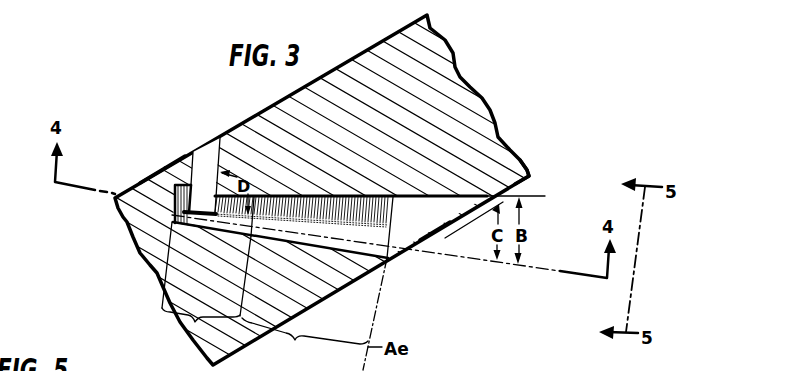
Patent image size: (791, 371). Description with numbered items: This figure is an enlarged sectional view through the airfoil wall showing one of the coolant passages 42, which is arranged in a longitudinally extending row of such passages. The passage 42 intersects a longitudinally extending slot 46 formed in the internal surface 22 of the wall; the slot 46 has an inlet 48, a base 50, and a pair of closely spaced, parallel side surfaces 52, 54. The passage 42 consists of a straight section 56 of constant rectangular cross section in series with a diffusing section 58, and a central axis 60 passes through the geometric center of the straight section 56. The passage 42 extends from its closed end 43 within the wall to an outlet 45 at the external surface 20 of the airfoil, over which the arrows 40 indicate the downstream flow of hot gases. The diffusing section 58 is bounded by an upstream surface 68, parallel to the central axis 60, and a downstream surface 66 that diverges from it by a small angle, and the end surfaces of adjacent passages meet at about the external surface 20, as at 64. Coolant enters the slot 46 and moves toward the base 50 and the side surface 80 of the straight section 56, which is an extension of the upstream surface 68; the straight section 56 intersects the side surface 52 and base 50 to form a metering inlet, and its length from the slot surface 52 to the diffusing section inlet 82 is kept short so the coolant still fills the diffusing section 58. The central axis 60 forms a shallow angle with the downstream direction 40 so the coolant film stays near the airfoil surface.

The internal surface of the wall 22 is at (368, 49).
The external surface of the airfoil 20 is at (531, 176).
The closed end of the passage 43 is at (152, 176).
The slot 46 is at (173, 164).
The side surface of the slot 54 is at (198, 156).
The inlet of the slot 48 is at (212, 141).
The side surface of the slot 52 is at (220, 138).
The coolant passage 42 is at (298, 196).
The downstream surface of the diffusing section 66 is at (330, 196).
The base of the slot 50 is at (200, 219).
The inlet of the diffusing section 82 is at (257, 226).
The upstream surface of the diffusing section 68 is at (294, 241).
The side surface of the straight section 80 is at (200, 227).
The straight section 56 is at (206, 283).
The diffusing section 58 is at (305, 340).
The intersection of end surfaces 64 is at (391, 227).
The outlet of the passage 45 is at (434, 233).
The arrows representing direction of flow 40 is at (465, 225).
The central axis of the passage 60 is at (500, 266).